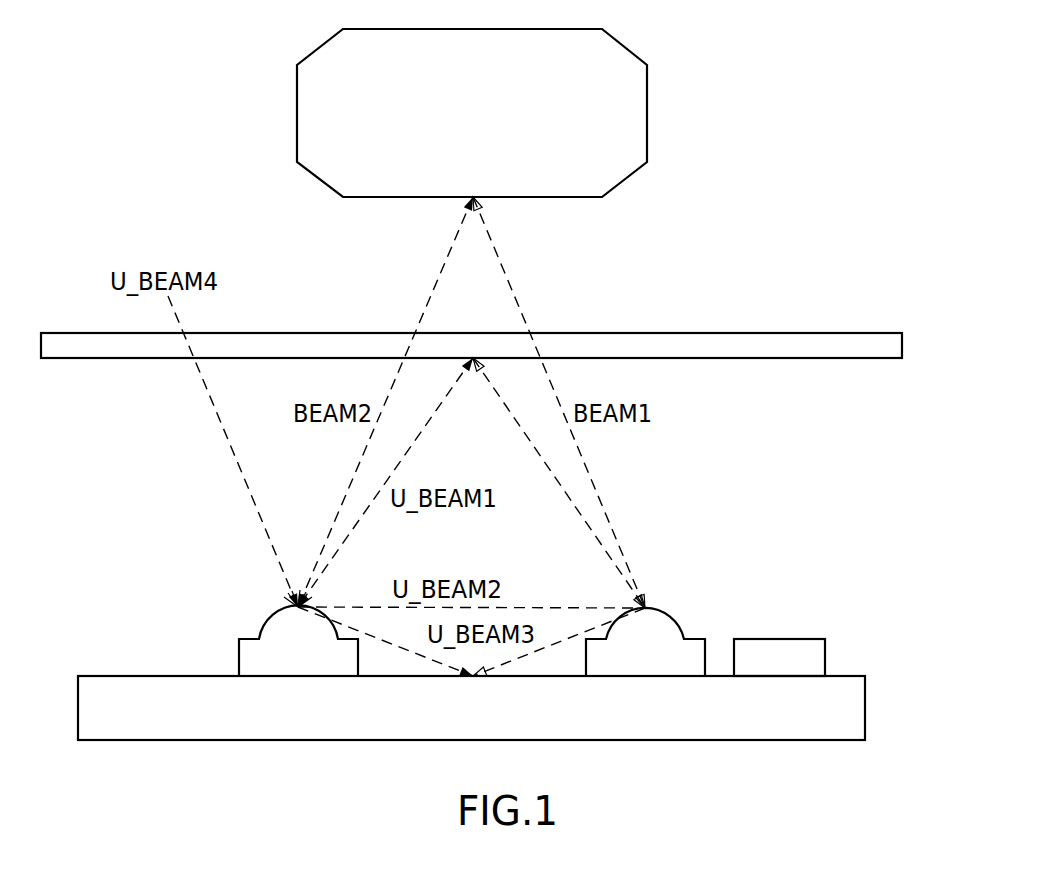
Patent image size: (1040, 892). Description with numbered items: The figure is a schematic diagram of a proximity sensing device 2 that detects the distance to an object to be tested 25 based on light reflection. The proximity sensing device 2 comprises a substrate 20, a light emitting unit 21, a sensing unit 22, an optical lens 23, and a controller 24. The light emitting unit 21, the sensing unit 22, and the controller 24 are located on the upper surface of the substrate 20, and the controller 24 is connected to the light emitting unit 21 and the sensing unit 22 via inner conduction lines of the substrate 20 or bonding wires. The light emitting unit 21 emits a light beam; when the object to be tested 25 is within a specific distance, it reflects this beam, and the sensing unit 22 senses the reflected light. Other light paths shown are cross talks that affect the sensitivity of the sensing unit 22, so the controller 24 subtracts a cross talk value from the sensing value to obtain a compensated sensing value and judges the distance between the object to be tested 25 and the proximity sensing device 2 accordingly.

The proximity sensing device 2 is at (948, 398).
The substrate 20 is at (865, 705).
The light emitting unit 21 is at (677, 622).
The sensing unit 22 is at (267, 620).
The optical lens 23 is at (818, 333).
The controller 24 is at (782, 638).
The object to be tested 25 is at (647, 112).